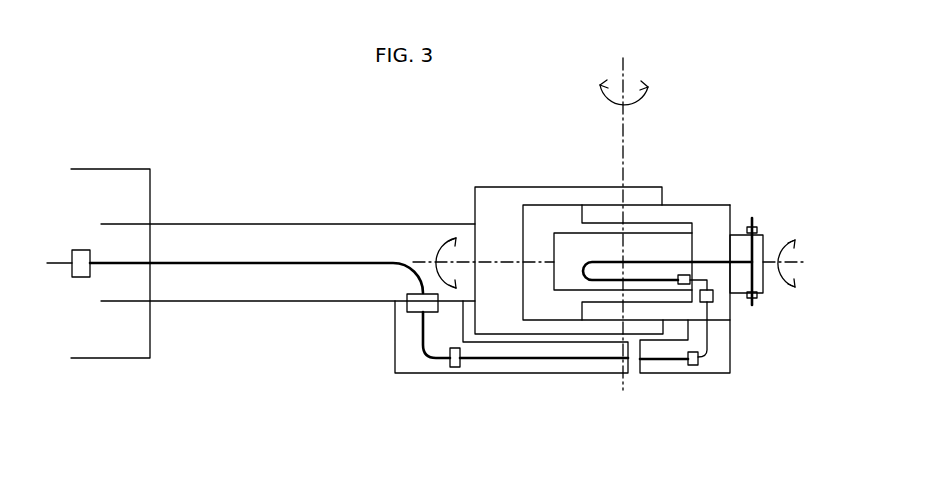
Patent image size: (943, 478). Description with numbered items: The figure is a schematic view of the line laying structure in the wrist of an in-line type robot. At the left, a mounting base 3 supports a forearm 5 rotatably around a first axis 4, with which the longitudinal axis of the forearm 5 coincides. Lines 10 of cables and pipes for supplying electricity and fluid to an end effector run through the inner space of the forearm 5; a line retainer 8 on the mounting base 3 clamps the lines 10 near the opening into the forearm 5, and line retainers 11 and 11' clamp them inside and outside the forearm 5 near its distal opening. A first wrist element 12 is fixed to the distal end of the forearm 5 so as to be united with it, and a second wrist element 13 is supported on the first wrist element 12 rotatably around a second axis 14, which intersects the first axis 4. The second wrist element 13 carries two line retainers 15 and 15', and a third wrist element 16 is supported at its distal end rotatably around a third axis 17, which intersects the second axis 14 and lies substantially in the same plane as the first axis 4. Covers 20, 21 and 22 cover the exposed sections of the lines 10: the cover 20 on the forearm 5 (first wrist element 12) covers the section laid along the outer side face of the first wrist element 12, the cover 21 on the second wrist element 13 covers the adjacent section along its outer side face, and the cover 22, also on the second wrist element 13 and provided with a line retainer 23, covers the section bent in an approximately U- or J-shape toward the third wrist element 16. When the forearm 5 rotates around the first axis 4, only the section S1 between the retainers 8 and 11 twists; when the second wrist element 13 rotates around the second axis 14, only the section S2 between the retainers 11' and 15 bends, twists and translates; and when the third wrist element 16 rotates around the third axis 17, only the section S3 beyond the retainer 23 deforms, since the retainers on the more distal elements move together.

The mounting base 3 is at (137, 169).
The first axis 4 is at (470, 262).
The forearm 5 is at (210, 224).
The line retainer 8 is at (87, 250).
The lines 10 is at (363, 260).
The line retainer 11 is at (376, 330).
The line retainer 11' is at (430, 371).
The first wrist element 12 is at (485, 187).
The second wrist element 13 is at (710, 205).
The second axis 14 is at (644, 224).
The line retainer 15 is at (665, 381).
The line retainer 15' is at (746, 327).
The third wrist element 16 is at (738, 233).
The third axis 17 is at (793, 263).
The cover 20 is at (505, 373).
The cover 21 is at (718, 373).
The cover 22 is at (572, 233).
The line retainer 23 is at (678, 275).
The section S1 is at (306, 254).
The section S2 is at (583, 372).
The section S3 is at (616, 250).